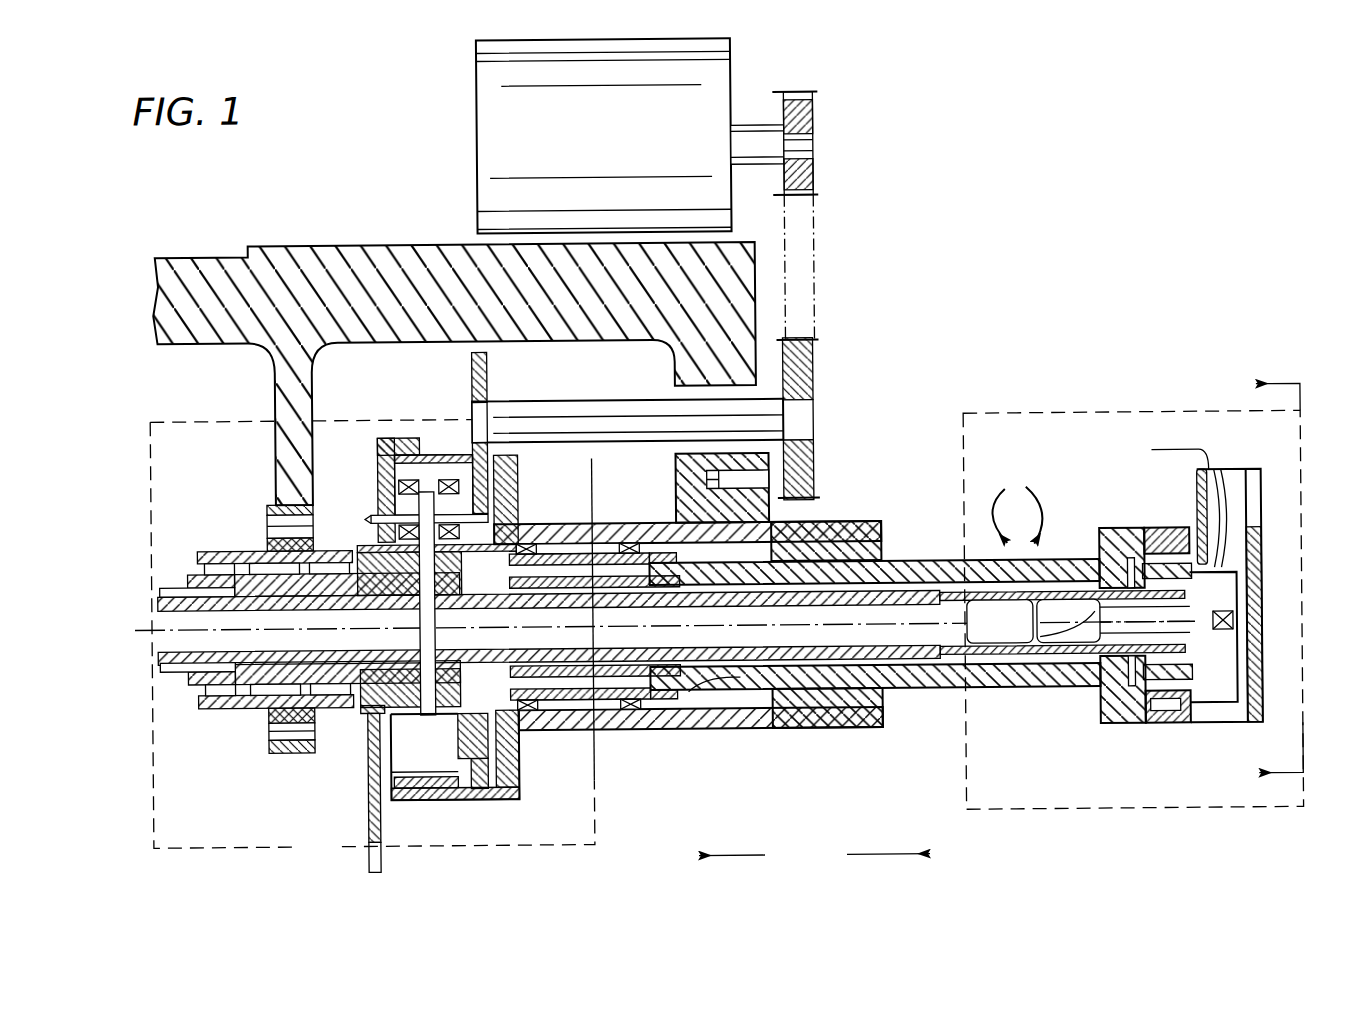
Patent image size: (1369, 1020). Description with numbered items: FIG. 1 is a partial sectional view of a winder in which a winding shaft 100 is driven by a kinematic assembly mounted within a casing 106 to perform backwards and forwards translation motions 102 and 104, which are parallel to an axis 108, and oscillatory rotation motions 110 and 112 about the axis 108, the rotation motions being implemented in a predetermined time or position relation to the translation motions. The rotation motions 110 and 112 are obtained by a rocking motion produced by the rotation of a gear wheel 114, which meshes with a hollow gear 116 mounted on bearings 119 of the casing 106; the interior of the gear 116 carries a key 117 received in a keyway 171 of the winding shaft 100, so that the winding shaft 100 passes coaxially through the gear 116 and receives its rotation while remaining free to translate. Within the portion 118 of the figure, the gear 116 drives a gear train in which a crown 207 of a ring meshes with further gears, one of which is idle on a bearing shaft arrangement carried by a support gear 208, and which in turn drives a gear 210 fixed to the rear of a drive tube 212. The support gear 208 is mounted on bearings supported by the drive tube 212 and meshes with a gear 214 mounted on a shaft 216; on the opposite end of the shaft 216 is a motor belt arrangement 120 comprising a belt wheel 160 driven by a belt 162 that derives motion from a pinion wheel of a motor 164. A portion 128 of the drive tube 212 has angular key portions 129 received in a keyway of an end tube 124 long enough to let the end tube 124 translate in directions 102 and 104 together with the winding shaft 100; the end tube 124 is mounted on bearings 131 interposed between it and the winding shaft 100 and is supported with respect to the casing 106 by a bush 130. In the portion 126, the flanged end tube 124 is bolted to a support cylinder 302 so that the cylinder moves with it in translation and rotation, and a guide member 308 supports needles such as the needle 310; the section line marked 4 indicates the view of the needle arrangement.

The winding shaft 100 is at (1020, 692).
The backwards translation motion 102 is at (750, 858).
The forwards translation motion 104 is at (880, 858).
The casing 106 is at (832, 520).
The axis 108 is at (915, 596).
The rotation motion 110 is at (992, 498).
The rotation motion 112 is at (1052, 499).
The gear wheel 114 is at (366, 812).
The gear 116 is at (368, 545).
The key 117 is at (283, 605).
The portion 118 is at (528, 850).
The bearings 119 is at (268, 540).
The motor belt arrangement 120 is at (830, 296).
The end tube 124 is at (1072, 692).
The portion 126 is at (1232, 815).
The portion of drive tube 128 is at (655, 540).
The angular key portions 129 is at (728, 728).
The bush 130 is at (884, 552).
The bearings 131 is at (563, 604).
The belt wheel 160 is at (832, 140).
The belt 162 is at (818, 230).
The motor 164 is at (733, 62).
The keyway 171 is at (338, 605).
The crown 207 is at (418, 800).
The support gear 208 is at (500, 497).
The gear 210 is at (440, 705).
The drive tube 212 is at (604, 729).
The gear 214 is at (472, 372).
The shaft 216 is at (643, 425).
The support cylinder 302 is at (1166, 729).
The guide member 308 is at (1263, 588).
The needle 310 is at (1242, 500).
The section line 4- 4 is at (1265, 587).